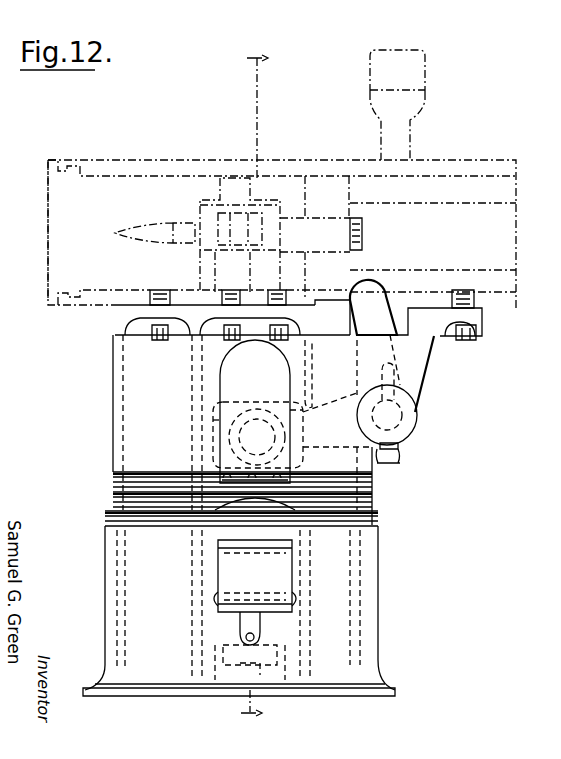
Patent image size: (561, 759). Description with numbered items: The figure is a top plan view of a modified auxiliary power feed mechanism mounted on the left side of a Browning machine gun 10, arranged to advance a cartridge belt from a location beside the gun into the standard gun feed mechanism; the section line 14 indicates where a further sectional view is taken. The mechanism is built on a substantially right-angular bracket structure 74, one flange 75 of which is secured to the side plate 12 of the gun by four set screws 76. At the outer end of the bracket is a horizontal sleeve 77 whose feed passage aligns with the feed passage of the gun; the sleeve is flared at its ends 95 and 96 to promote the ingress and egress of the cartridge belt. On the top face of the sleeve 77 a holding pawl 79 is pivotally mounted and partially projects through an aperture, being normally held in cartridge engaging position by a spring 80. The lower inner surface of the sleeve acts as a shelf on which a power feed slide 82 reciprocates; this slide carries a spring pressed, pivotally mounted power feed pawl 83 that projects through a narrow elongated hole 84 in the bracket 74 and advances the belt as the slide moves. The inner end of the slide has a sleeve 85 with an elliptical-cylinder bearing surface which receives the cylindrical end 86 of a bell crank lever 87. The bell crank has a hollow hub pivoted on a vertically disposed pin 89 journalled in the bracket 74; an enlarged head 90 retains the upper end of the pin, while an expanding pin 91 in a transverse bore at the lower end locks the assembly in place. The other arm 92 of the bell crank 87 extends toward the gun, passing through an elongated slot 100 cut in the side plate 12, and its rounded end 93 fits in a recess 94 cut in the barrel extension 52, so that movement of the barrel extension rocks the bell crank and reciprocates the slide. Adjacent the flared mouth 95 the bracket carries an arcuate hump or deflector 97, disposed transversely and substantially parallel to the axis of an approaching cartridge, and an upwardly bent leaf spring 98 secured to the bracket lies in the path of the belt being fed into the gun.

The firearm stock 10 is at (48, 185).
The side plate 12 is at (446, 172).
The section line 14 is at (254, 390).
The barrel extension 52 is at (433, 238).
The bracket structure 74 is at (113, 352).
The flange 75 is at (120, 320).
The set screws 76 is at (488, 330).
The horizontal sleeve 77 is at (379, 595).
The holding pawl 79 is at (255, 576).
The spring 80 is at (246, 636).
The power feed slide 82 is at (207, 428).
The power feed pawl 83 is at (222, 684).
The elongated hole 84 is at (254, 512).
The sleeve 85 is at (244, 414).
The cylindrical end 86 is at (257, 437).
The bell crank lever 87 is at (332, 404).
The pin 89 is at (387, 404).
The enlarged head 90 is at (405, 428).
The expanding pin 91 is at (400, 458).
The arm 92 is at (357, 324).
The rounded end 93 is at (366, 272).
The recess 94 is at (380, 282).
The flared end 95 is at (380, 517).
The flared end 96 is at (372, 684).
The deflector 97 is at (156, 488).
The leaf spring 98 is at (255, 411).
The elongated slot 100 is at (450, 304).